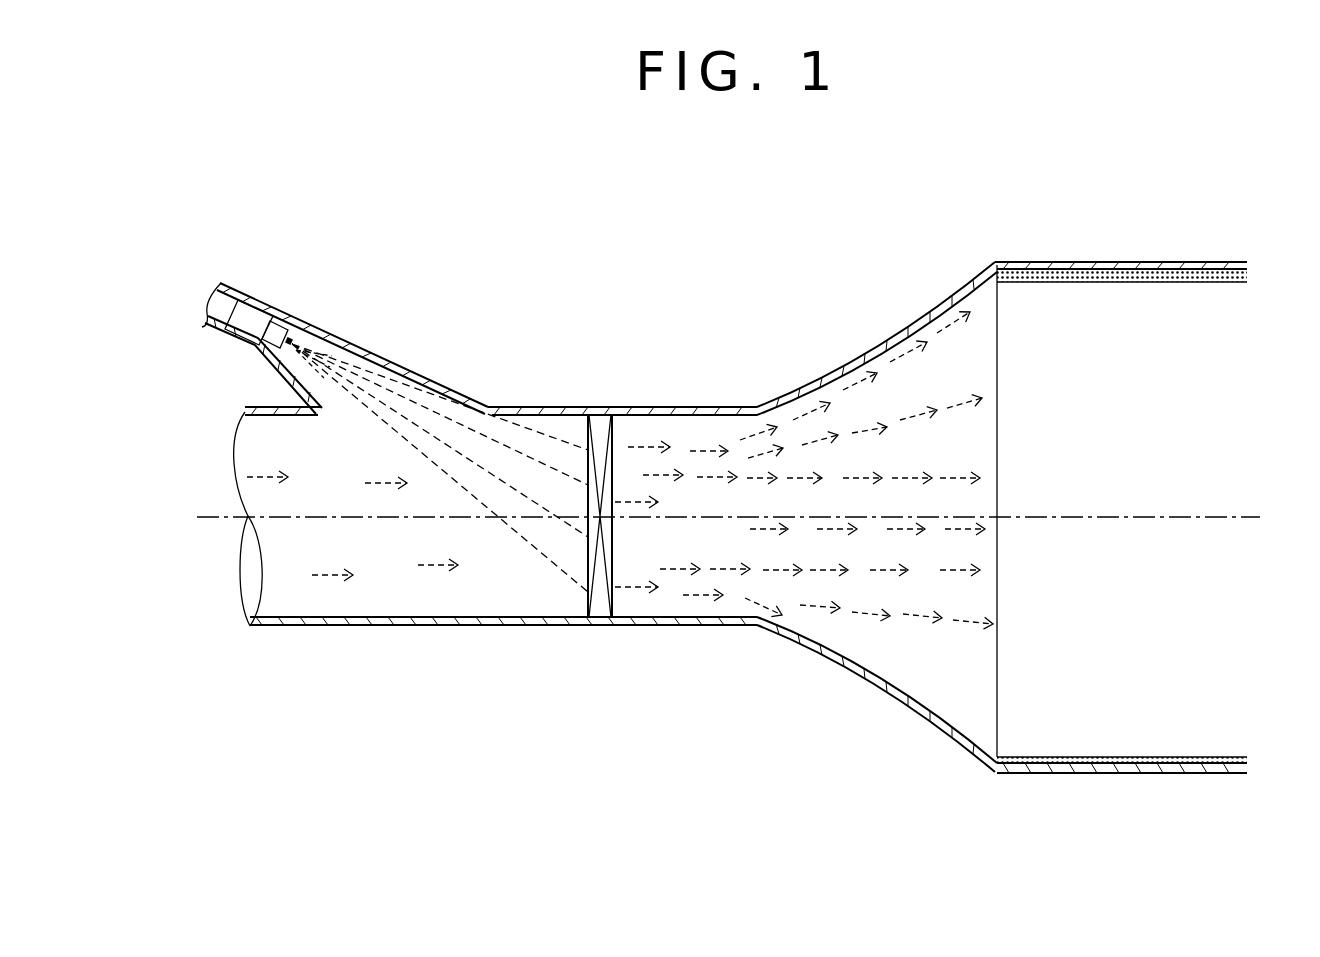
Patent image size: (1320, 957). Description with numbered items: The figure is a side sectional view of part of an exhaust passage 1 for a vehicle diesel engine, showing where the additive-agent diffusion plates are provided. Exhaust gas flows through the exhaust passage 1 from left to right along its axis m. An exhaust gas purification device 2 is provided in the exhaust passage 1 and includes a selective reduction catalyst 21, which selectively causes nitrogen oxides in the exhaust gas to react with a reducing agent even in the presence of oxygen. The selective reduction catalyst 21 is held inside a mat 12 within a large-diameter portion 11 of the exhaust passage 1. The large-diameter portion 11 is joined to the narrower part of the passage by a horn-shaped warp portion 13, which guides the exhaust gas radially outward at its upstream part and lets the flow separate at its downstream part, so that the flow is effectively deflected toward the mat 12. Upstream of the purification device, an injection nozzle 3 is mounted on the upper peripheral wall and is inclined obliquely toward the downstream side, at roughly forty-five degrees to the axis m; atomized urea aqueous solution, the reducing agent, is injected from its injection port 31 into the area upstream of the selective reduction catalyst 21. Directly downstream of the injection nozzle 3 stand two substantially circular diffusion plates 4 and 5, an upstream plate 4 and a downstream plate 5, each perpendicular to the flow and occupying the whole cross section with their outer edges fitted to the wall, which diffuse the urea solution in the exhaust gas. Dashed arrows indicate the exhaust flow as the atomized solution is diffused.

The exhaust passage 1 is at (693, 408).
The large-diameter portion 11 is at (1098, 266).
The mat 12 is at (1170, 273).
The warp portion 13 is at (903, 334).
The exhaust gas purification device 2 is at (1097, 765).
The selective reduction catalyst 21 is at (1196, 743).
The injection nozzle 3 is at (265, 304).
The injection port 31 is at (293, 341).
The upstream additive-agent diffusion plate 4 is at (587, 432).
The downstream additive-agent diffusion plate 5 is at (612, 438).
The axis m is at (1162, 518).